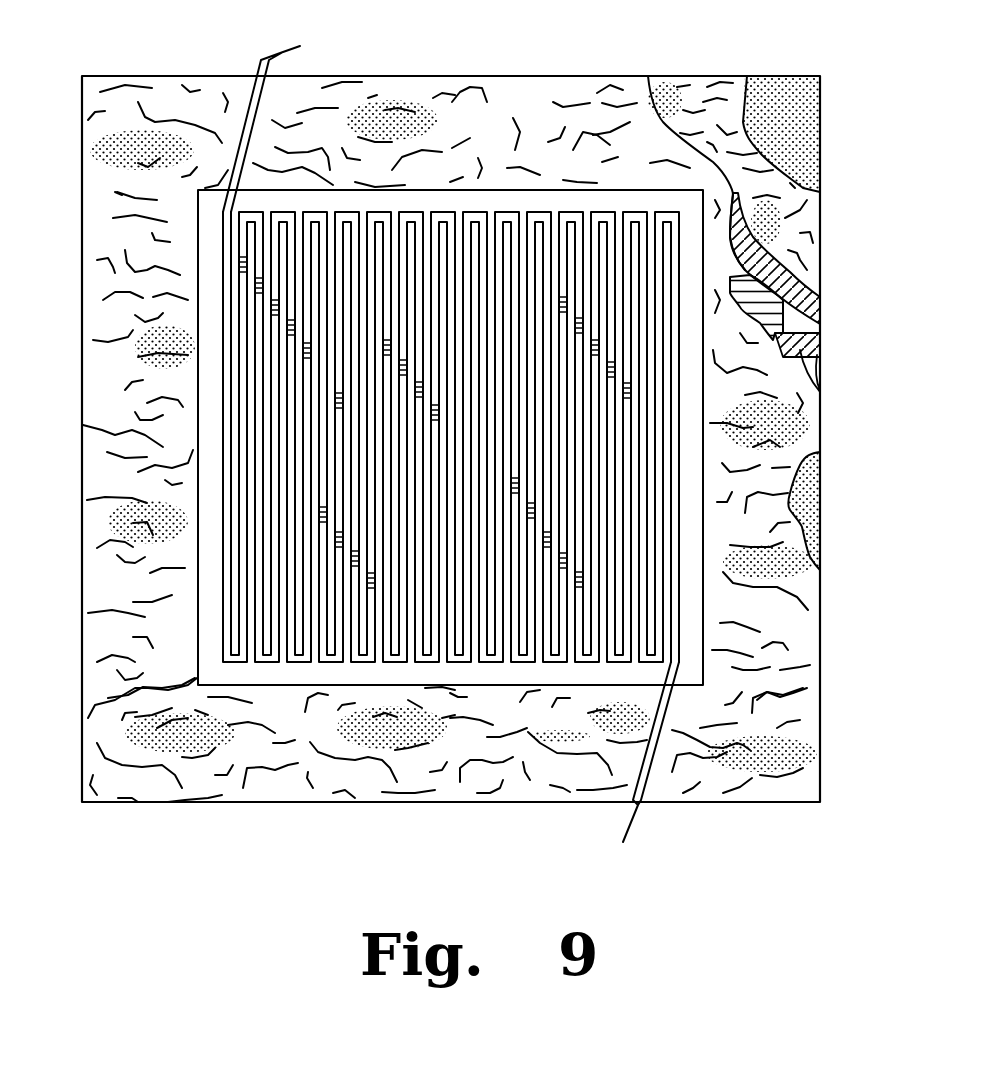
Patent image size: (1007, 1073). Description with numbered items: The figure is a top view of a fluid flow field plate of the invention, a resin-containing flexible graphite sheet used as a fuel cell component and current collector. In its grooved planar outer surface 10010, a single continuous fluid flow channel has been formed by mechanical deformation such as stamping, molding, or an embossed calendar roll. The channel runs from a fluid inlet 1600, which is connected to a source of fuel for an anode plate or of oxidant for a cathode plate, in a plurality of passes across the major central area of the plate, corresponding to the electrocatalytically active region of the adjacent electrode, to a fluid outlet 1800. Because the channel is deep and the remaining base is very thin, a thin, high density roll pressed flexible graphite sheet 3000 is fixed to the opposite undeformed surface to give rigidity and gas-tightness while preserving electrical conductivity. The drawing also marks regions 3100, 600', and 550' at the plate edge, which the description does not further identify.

The fluid inlet 1600 is at (292, 120).
The fluid outlet 1800 is at (629, 770).
The stippled region 3100 is at (798, 110).
The hatched layer region 600' is at (816, 345).
The horizontally hatched region 550' is at (814, 332).
The roll pressed flexible graphite sheet 3000 is at (813, 507).
The grooved planar outer surface 10010 is at (287, 783).